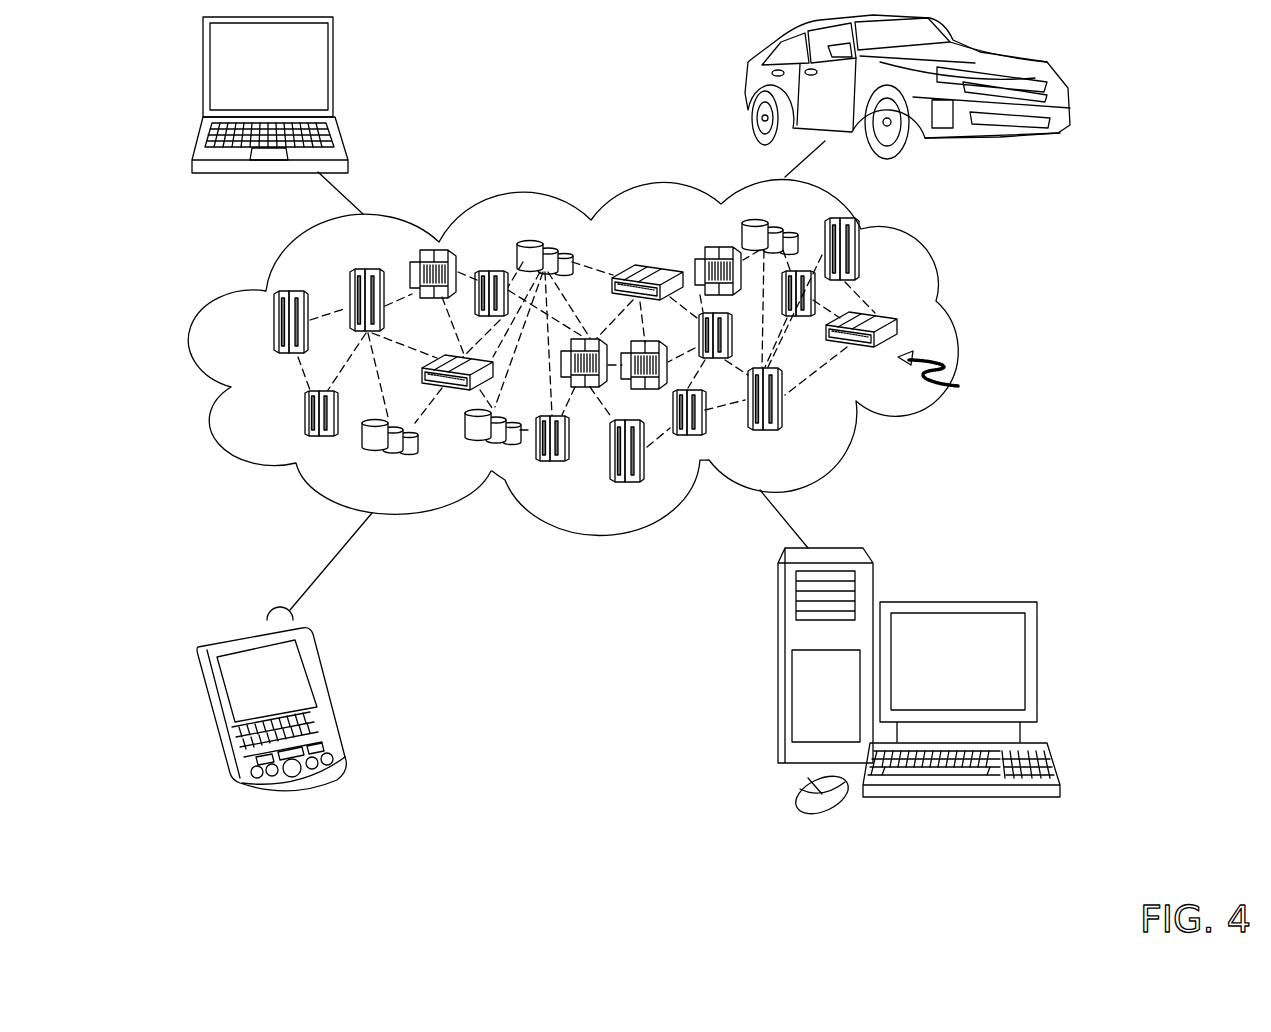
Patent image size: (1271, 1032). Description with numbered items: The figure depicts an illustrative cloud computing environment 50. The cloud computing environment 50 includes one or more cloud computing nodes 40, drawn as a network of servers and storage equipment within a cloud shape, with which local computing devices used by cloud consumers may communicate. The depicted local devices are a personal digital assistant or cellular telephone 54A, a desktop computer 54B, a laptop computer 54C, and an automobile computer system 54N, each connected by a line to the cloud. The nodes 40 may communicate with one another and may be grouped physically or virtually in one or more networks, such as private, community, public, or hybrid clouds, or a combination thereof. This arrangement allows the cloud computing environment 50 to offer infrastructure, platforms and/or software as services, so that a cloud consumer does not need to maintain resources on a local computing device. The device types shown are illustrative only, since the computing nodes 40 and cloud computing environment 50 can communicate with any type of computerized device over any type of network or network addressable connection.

The cloud computing nodes 40 is at (947, 376).
The cloud computing environment 50 is at (953, 328).
The personal digital assistant or cellular telephone 54A is at (326, 690).
The desktop computer 54B is at (955, 602).
The laptop computer 54C is at (333, 73).
The automobile computer system 54N is at (746, 85).